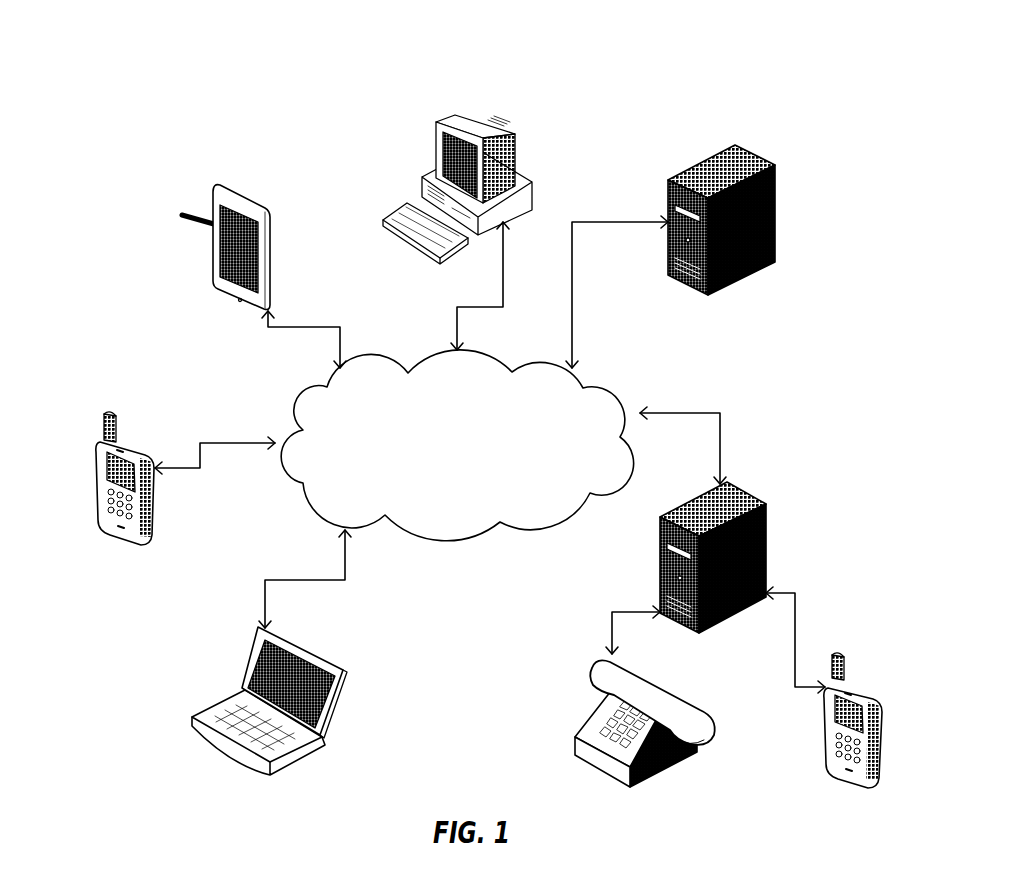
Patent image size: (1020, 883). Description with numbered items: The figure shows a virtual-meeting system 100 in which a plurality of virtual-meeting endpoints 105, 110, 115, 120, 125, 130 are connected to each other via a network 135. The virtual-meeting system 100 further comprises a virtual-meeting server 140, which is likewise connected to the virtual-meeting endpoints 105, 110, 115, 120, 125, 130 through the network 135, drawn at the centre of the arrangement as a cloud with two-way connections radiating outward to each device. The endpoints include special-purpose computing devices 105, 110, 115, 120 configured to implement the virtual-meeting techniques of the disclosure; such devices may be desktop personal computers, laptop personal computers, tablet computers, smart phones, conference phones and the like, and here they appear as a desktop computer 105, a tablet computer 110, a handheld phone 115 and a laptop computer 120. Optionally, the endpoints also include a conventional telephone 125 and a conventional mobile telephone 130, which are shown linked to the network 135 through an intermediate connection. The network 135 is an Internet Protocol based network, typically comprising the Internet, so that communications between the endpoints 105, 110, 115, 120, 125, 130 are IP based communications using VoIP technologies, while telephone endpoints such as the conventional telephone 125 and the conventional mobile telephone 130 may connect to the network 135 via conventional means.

The virtual-meeting system 100 is at (66, 63).
The virtual-meeting endpoint 105 is at (408, 141).
The virtual-meeting endpoint 110 is at (191, 183).
The virtual-meeting endpoint 115 is at (76, 435).
The virtual-meeting endpoint 120 is at (208, 666).
The conventional telephone 125 is at (556, 705).
The conventional mobile telephone 130 is at (855, 633).
The network 135 is at (477, 456).
The virtual-meeting server 140 is at (656, 171).